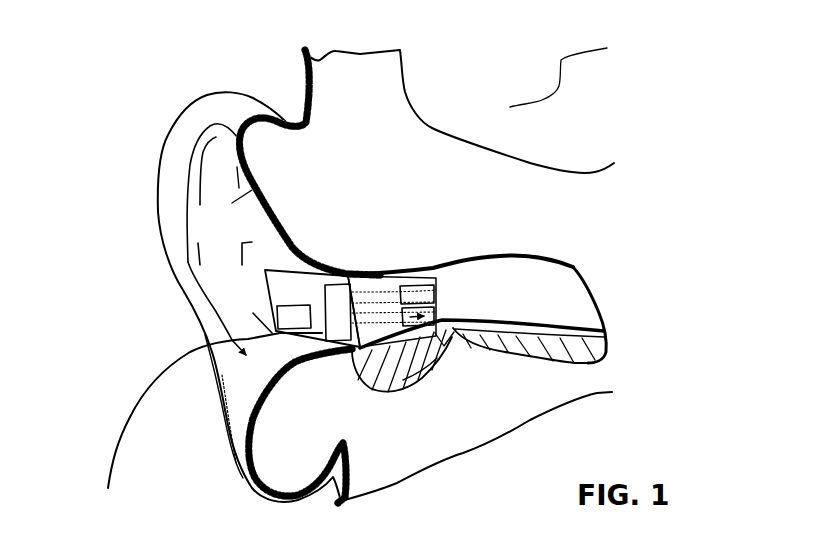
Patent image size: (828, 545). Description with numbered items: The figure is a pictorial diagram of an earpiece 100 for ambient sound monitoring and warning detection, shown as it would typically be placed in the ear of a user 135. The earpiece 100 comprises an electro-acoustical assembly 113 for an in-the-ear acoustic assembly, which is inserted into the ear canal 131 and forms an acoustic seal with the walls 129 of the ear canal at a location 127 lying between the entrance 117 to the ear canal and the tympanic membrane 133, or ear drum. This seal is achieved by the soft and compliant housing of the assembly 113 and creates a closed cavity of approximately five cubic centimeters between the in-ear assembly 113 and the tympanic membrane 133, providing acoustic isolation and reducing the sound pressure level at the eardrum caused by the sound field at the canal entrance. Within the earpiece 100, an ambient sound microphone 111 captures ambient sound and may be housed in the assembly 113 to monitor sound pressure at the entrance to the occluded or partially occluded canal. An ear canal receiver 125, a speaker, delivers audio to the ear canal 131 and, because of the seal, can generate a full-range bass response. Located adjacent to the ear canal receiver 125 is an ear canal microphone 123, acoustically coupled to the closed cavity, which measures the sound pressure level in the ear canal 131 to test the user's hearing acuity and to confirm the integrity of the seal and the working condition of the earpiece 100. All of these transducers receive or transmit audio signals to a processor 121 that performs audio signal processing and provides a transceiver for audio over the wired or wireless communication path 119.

The earpiece 100 is at (690, 448).
The ambient sound microphone 111 is at (297, 318).
The electro-acoustical assembly 113 is at (276, 264).
The entrance to the ear canal 117 is at (150, 135).
The communication path 119 is at (131, 408).
The processor 121 is at (340, 323).
The ear canal microphone 123 is at (473, 360).
The ear canal receiver 125 is at (412, 294).
The location 127 is at (368, 262).
The walls of the ear canal 129 is at (459, 258).
The ear canal 131 is at (474, 301).
The tympanic membrane 133 is at (580, 272).
The user 135 is at (577, 62).